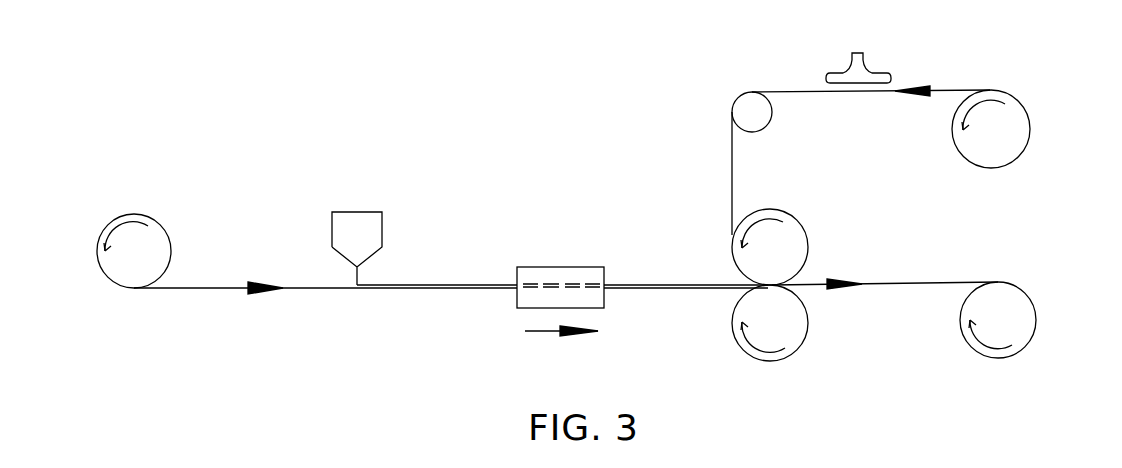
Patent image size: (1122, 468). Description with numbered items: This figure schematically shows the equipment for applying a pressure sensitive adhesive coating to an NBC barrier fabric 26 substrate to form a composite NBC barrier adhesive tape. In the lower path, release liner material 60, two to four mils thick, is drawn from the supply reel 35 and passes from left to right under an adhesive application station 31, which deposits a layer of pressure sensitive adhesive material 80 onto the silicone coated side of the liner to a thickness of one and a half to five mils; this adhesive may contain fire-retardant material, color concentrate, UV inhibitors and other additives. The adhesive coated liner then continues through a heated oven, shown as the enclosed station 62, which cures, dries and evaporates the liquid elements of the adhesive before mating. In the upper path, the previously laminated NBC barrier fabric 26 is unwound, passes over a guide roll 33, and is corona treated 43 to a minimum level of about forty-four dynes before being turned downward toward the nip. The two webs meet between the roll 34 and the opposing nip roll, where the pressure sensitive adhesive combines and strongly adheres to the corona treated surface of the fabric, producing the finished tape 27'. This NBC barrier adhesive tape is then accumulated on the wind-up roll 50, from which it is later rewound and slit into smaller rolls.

The supply reel 35 is at (132, 214).
The release liner material 60 is at (198, 288).
The adhesive application station 31 is at (356, 212).
The pressure sensitive adhesive material 80 is at (418, 285).
The heating / processing station 62 is at (560, 267).
The roll 34 is at (768, 209).
The laminated web 27' is at (885, 267).
The wind-up roll 50 is at (997, 358).
The guide roll 33 is at (748, 105).
The NBC barrier fabric 26 is at (942, 90).
The corona treatment 43 is at (857, 53).